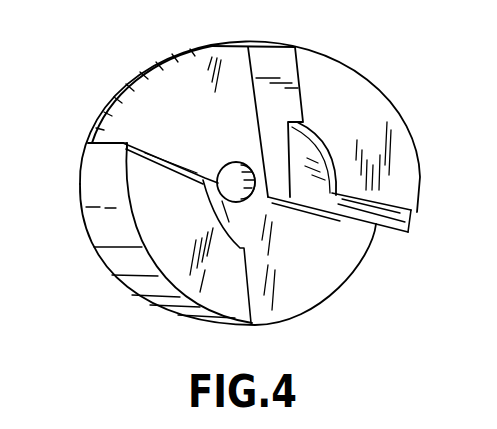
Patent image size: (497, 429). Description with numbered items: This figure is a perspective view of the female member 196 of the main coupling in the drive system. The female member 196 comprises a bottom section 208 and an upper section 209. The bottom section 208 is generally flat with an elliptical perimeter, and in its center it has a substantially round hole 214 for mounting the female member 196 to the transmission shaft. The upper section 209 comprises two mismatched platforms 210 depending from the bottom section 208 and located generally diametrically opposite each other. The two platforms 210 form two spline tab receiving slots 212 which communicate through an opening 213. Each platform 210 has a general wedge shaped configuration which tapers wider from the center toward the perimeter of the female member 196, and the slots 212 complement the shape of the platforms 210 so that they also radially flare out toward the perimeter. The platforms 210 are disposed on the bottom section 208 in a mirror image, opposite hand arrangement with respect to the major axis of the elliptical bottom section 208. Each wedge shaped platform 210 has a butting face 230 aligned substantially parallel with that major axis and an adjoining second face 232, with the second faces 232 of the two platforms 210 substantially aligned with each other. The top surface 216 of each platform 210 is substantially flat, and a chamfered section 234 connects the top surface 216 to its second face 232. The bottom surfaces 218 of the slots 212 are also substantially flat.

The female member 196 is at (370, 82).
The bottom section 208 is at (150, 58).
The upper section 209 is at (414, 192).
The platforms 210 is at (398, 140).
The spline tab receiving slots 212 is at (277, 312).
The opening 213 is at (262, 200).
The hole 214 is at (240, 164).
The top surface 216 is at (380, 125).
The bottom surfaces 218 is at (200, 122).
The butting face 230 is at (290, 47).
The second face 232 is at (126, 160).
The chamfered section 234 is at (152, 160).